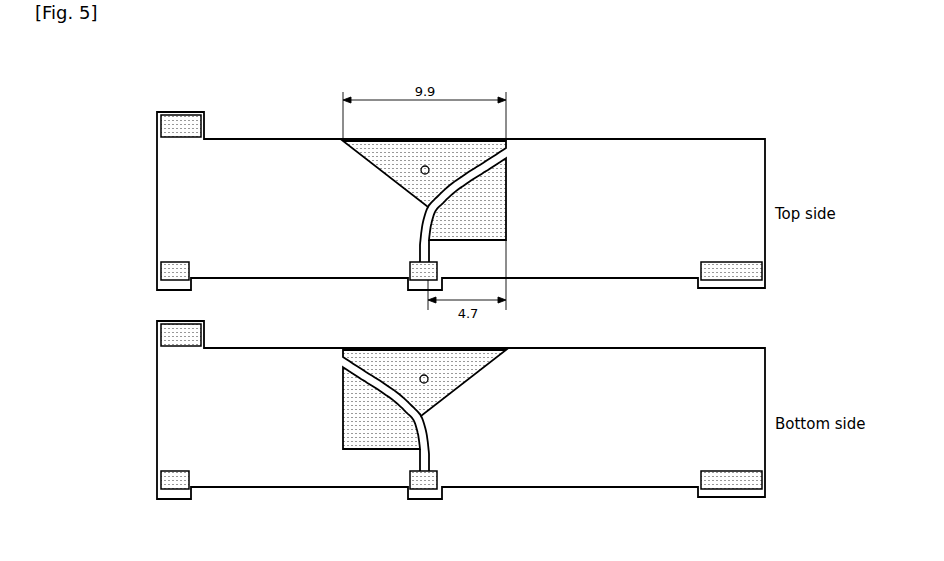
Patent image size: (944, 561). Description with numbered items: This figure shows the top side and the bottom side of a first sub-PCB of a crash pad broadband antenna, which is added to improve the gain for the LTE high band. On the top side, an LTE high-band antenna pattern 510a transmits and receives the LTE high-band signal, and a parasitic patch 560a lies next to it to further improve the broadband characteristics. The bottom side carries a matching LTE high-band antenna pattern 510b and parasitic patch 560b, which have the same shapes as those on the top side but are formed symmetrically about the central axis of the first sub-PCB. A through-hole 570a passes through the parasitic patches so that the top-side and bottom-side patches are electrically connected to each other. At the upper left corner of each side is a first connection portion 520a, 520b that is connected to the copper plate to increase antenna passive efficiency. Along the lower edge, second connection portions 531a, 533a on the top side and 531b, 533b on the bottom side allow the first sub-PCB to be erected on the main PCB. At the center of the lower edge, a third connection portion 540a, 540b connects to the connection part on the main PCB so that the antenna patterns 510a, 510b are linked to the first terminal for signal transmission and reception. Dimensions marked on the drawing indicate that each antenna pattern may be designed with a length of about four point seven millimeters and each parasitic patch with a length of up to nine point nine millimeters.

The LTE high-band antenna pattern 510a is at (507, 188).
The LTE high-band antenna pattern 510b is at (342, 398).
The first connection portion 520a is at (177, 120).
The first connection portion 520b is at (178, 332).
The second connection portion 531a is at (165, 267).
The second connection portion 531b is at (165, 477).
The second connection portion 533a is at (733, 272).
The second connection portion 533b is at (733, 483).
The third connection portion 540a is at (408, 279).
The third connection portion 540b is at (408, 490).
The parasitic patch 560a is at (510, 145).
The parasitic patch 560b is at (510, 354).
The through-hole 570a is at (421, 172).